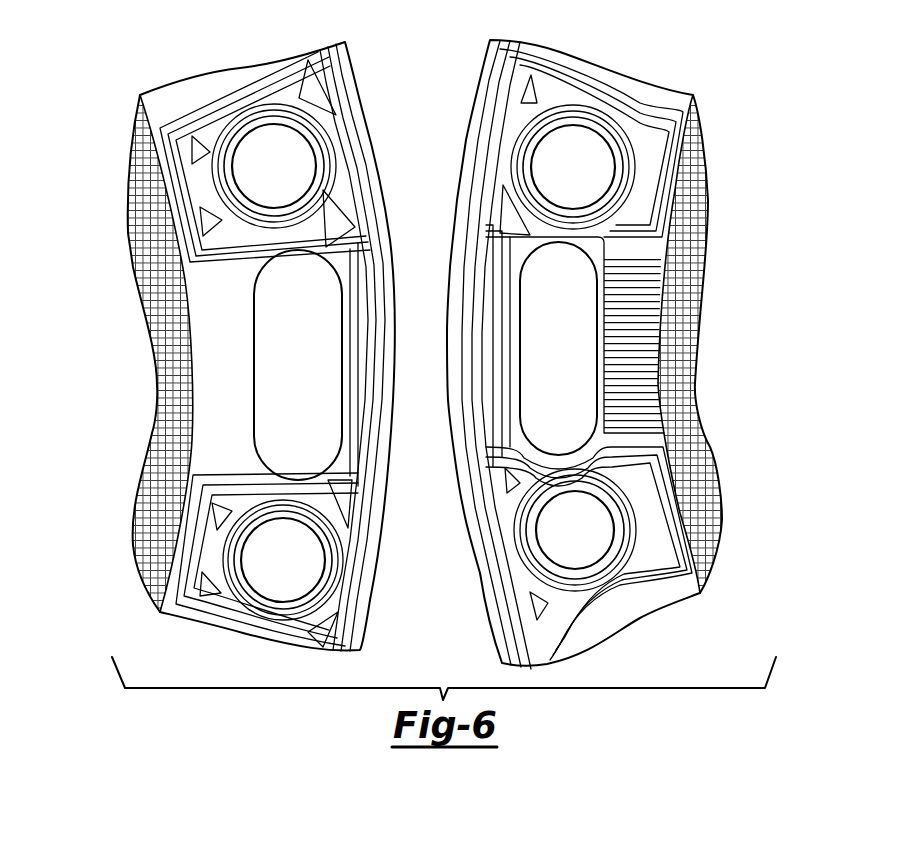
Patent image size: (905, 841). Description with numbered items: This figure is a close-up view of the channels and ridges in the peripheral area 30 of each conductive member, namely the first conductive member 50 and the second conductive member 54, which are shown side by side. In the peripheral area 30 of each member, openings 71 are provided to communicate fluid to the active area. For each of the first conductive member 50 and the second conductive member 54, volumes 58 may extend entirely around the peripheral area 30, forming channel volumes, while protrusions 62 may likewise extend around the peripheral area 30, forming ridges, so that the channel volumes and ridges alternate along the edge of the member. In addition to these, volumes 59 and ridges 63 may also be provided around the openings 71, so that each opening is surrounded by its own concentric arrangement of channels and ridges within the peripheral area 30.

The peripheral area 30 is at (181, 74).
The first conductive member 50 is at (141, 411).
The second conductive member 54 is at (703, 340).
The volumes 58 is at (352, 75).
The protrusions 62 is at (355, 115).
The volumes 59 is at (262, 121).
The ridges 63 is at (240, 207).
The openings 71 is at (284, 181).